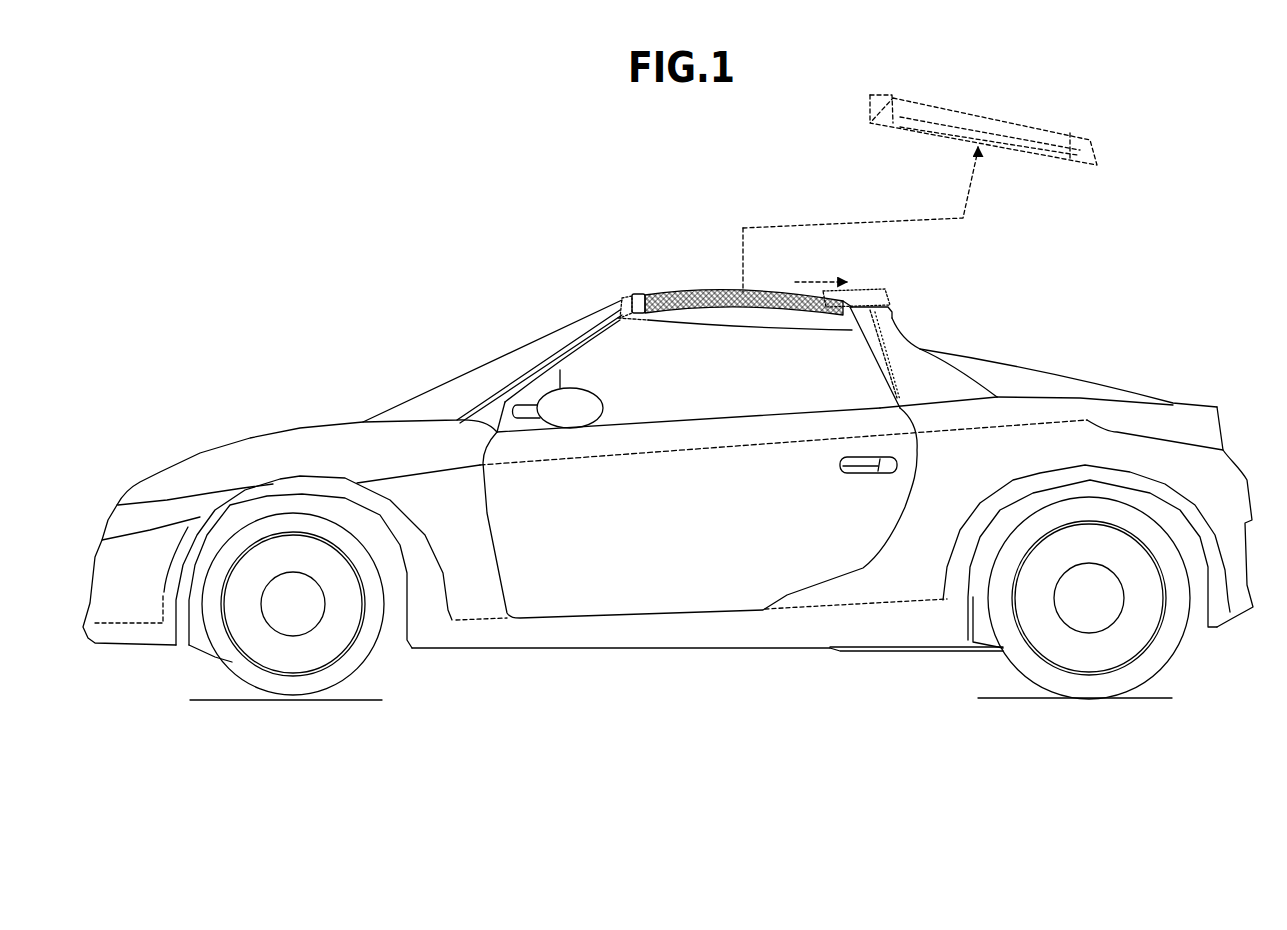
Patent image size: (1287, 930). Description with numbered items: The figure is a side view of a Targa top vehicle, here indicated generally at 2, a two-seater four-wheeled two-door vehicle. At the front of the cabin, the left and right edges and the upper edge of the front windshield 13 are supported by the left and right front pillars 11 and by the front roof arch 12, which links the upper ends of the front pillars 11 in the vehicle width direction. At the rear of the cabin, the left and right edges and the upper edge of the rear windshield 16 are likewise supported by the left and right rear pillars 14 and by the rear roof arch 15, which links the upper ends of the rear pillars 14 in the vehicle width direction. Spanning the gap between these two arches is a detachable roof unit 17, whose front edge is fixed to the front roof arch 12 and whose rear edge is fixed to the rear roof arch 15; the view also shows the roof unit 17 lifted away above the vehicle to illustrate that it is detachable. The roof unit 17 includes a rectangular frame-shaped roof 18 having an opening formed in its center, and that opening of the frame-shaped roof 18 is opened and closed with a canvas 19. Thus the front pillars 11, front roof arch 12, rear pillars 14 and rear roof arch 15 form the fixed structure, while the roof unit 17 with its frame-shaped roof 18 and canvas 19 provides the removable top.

The roof structure 2 is at (545, 278).
The front pillar 11 is at (537, 373).
The front roof arch 12 is at (618, 305).
The front windshield 13 is at (435, 383).
The rear pillar 14 is at (925, 373).
The rear roof arch 15 is at (888, 307).
The rear windshield 16 is at (877, 365).
The detachable roof unit 17 is at (698, 280).
The frame-shaped roof 18 is at (728, 325).
The canvas 19 is at (760, 295).